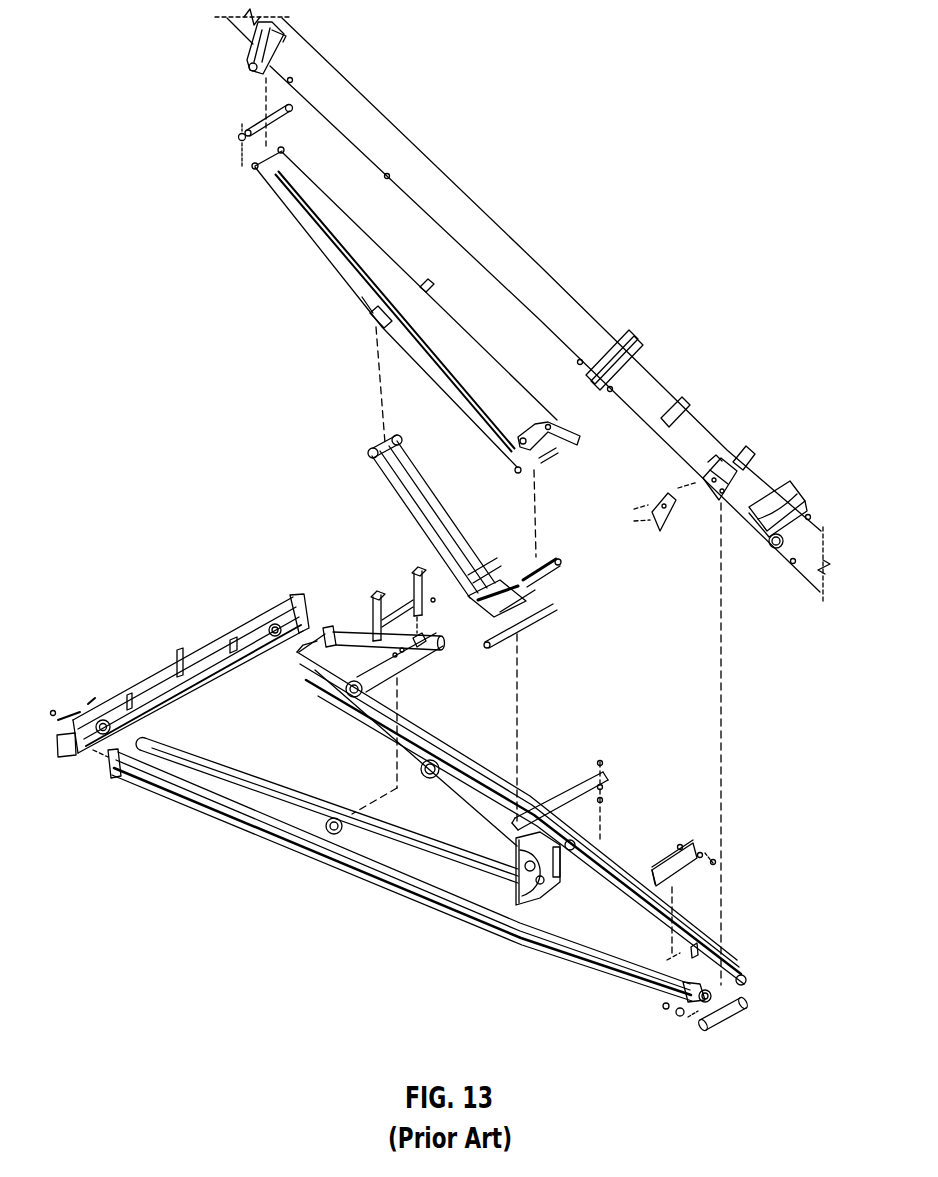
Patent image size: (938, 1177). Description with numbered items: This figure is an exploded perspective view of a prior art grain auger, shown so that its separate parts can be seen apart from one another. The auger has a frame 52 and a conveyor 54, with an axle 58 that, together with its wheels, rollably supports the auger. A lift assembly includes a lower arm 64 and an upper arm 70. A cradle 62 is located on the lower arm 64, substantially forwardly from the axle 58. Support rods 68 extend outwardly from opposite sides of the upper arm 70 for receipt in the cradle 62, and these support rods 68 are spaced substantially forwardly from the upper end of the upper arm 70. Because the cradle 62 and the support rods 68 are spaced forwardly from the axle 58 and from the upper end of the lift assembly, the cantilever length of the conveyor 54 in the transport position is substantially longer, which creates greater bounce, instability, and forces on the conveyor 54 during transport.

The frame 52 is at (257, 827).
The conveyor 54 is at (488, 213).
The axle 58 is at (187, 686).
The cradle 62 is at (374, 592).
The lower arm 64 is at (262, 779).
The support rods 68 is at (432, 293).
The upper arm 70 is at (324, 233).